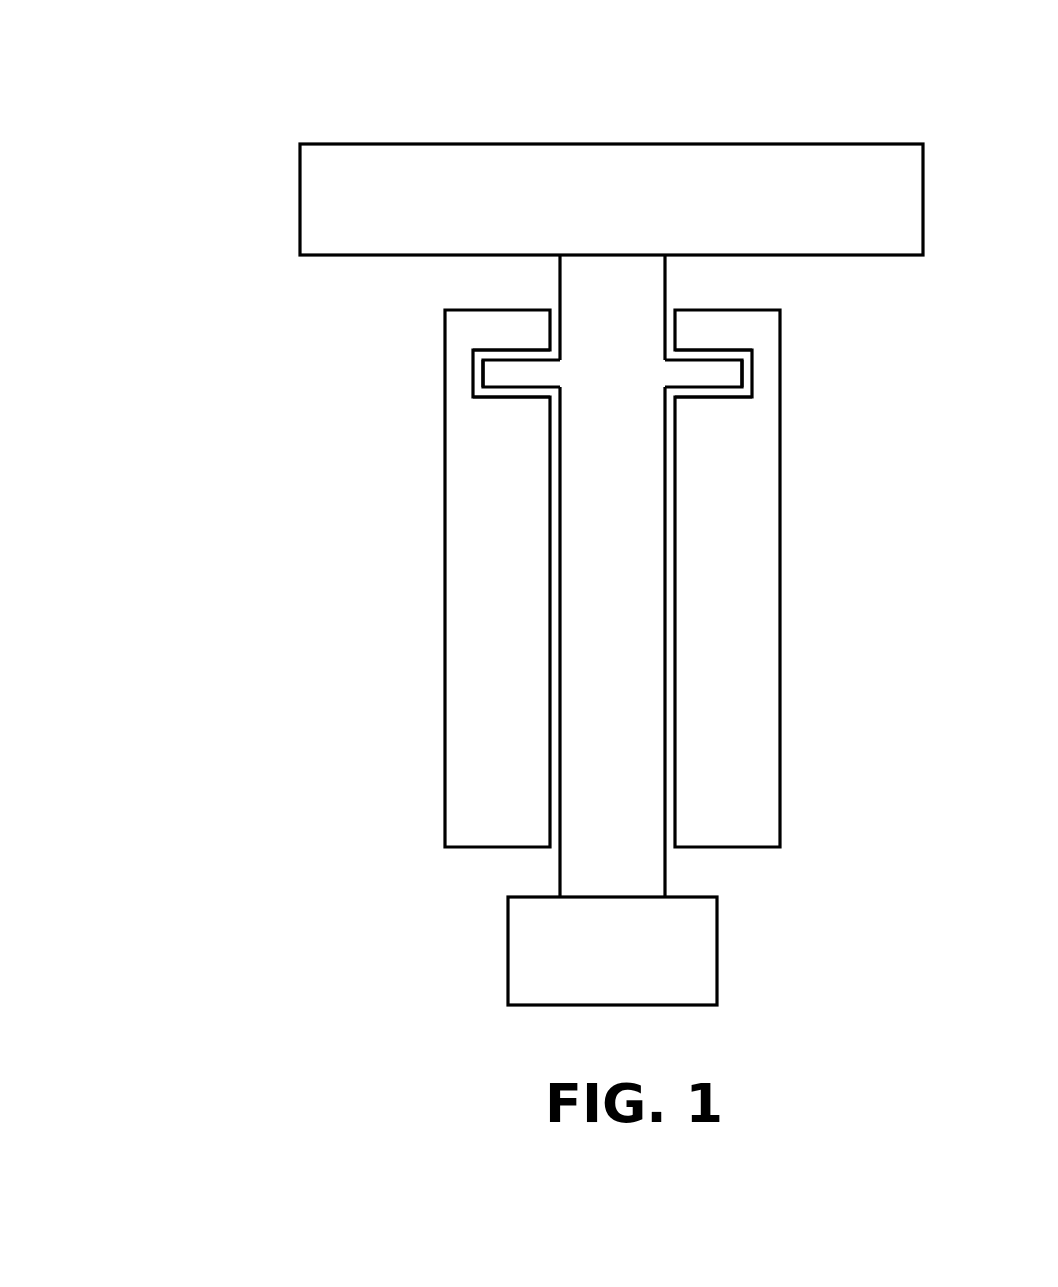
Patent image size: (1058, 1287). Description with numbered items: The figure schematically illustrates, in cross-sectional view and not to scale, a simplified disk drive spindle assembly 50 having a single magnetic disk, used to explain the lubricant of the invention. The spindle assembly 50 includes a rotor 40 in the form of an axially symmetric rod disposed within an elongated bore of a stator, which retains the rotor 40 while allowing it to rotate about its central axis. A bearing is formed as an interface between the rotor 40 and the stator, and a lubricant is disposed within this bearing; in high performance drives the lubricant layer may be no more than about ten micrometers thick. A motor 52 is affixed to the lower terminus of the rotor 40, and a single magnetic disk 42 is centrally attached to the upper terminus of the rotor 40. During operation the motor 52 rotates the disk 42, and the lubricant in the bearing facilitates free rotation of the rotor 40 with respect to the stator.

The spindle assembly 50 is at (196, 149).
The magnetic disk 42 is at (700, 160).
The rotor 40 is at (632, 566).
The motor 52 is at (633, 968).